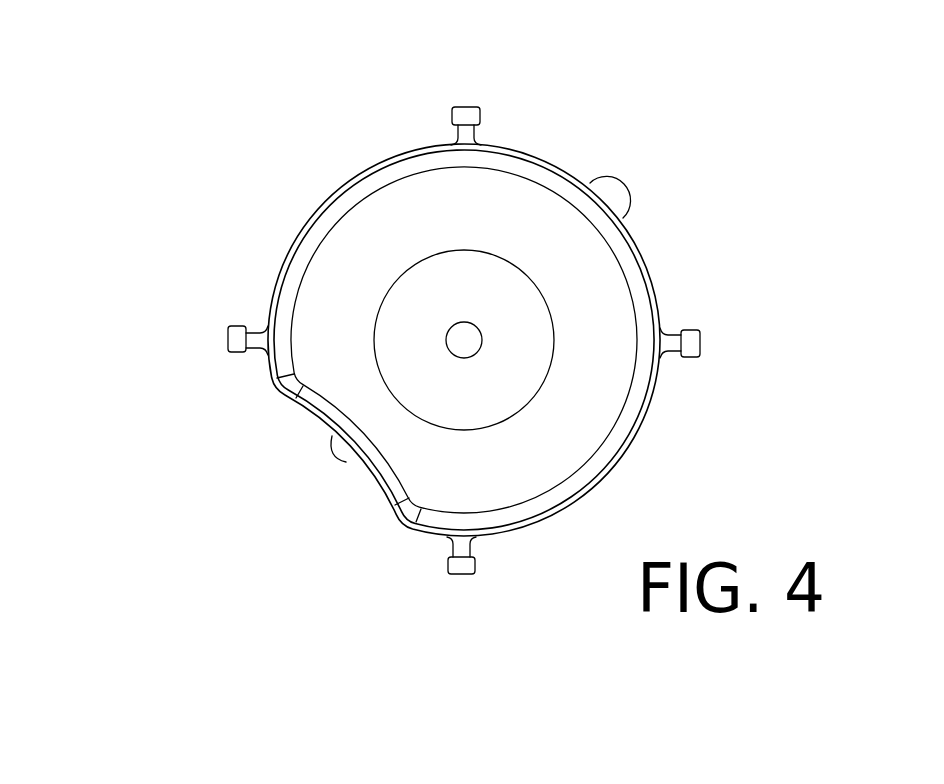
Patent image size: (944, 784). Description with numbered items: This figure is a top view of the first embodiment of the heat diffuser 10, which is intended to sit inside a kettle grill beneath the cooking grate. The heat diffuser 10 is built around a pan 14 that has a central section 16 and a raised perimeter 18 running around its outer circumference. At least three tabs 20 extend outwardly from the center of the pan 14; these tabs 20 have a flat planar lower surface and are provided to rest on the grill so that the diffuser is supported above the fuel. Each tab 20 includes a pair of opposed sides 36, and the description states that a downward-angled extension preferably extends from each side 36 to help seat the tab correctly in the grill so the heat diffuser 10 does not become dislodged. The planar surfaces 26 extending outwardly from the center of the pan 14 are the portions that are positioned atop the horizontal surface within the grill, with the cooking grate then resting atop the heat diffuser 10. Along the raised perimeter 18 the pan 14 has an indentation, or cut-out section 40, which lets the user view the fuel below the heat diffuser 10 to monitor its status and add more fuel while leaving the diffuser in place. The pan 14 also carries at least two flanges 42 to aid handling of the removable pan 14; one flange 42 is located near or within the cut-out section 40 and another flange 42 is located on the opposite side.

The heat diffuser 10 is at (248, 168).
The pan 14 is at (588, 330).
The central section 16 is at (437, 318).
The raised perimeter 18 is at (544, 150).
The tab 20 is at (458, 104).
The planar surface 26 is at (478, 104).
The opposed side 36 is at (452, 570).
The cut-out section 40 is at (375, 480).
The flange 42 is at (613, 192).